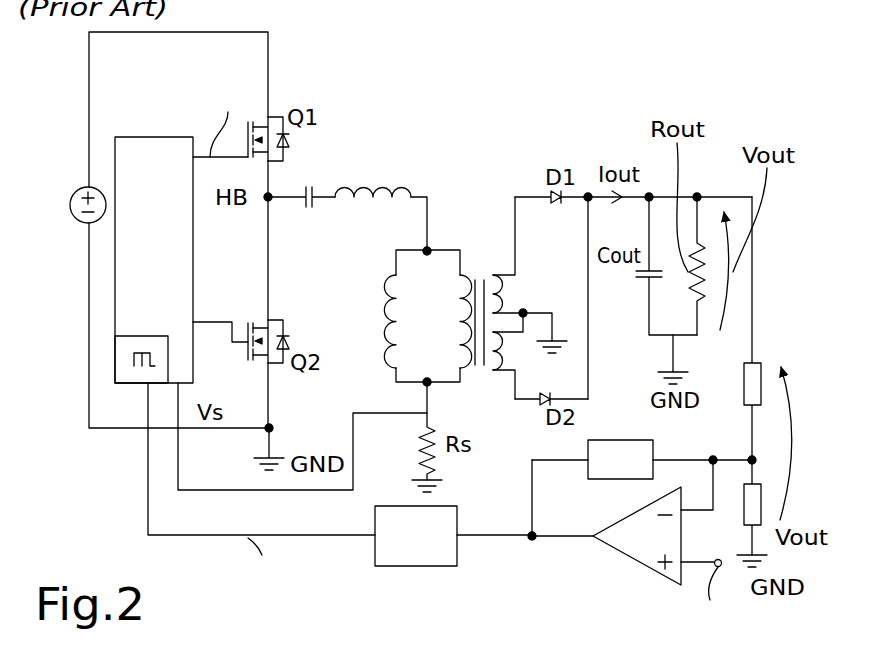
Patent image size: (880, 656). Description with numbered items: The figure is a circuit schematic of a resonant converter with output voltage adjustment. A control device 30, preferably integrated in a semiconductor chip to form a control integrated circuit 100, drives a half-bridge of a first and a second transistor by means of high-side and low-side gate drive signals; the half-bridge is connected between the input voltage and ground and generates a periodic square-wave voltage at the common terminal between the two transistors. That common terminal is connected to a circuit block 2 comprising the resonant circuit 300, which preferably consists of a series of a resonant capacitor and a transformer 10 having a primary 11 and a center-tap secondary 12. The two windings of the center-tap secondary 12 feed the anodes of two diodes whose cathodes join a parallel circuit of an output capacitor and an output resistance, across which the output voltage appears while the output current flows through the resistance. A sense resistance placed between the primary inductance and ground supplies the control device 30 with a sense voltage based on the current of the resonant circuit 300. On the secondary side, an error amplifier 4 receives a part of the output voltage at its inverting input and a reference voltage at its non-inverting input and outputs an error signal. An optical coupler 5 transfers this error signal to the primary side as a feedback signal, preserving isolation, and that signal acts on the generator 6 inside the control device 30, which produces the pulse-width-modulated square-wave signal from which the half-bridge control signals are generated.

The control integrated circuit 100 is at (106, 126).
The control device 30 is at (163, 137).
The generator 6 is at (134, 336).
The resonant circuit 300 is at (424, 158).
The circuit block 2 is at (514, 150).
The transformer 10 is at (478, 263).
The primary 11 is at (408, 247).
The center-tap secondary 12 is at (520, 270).
The error amplifier 4 is at (647, 552).
The optical coupler 5 is at (405, 566).